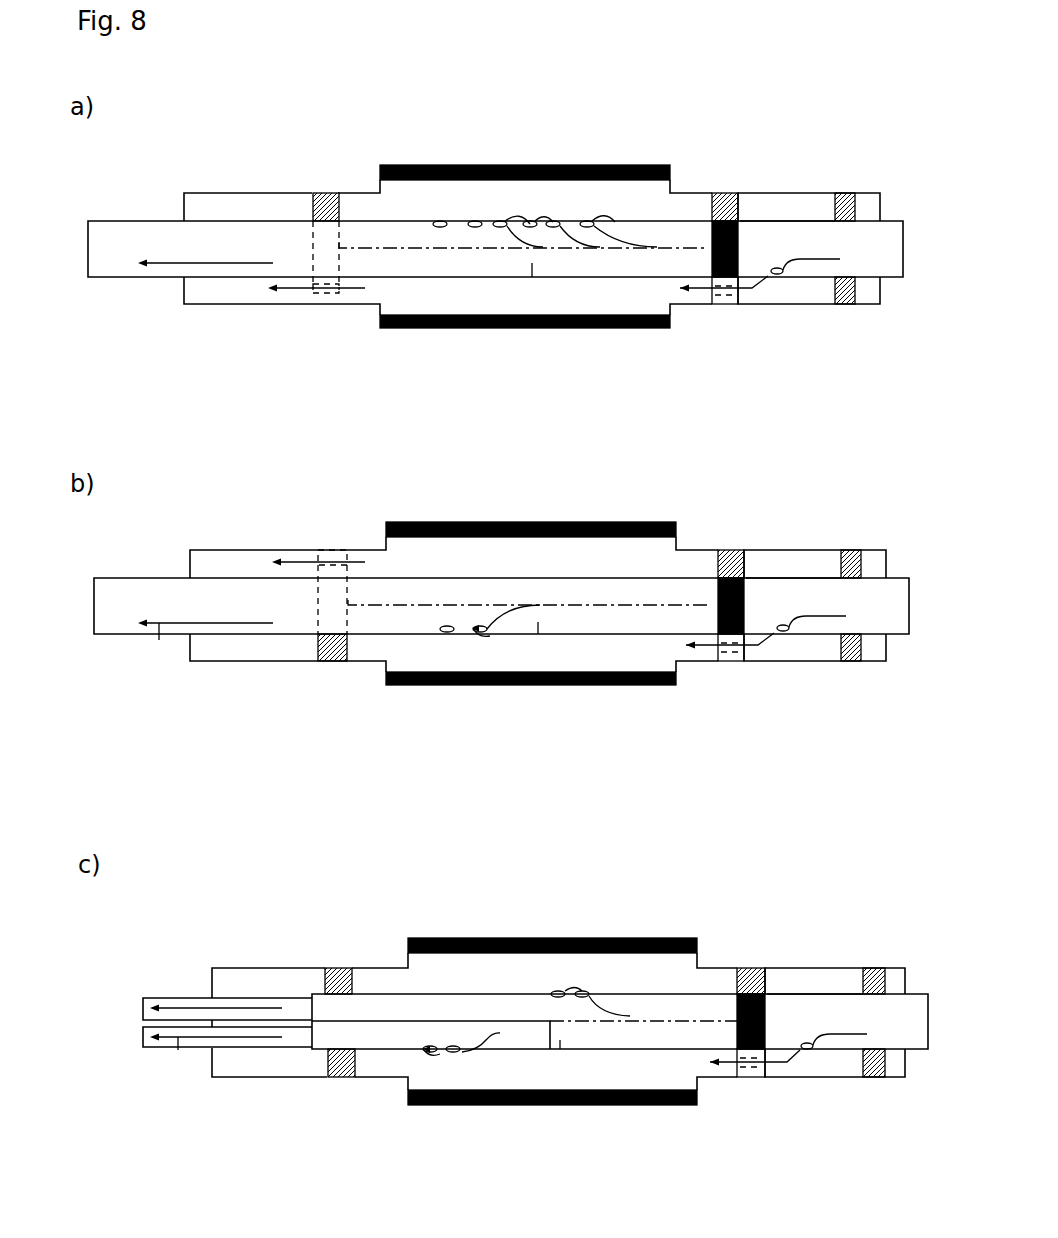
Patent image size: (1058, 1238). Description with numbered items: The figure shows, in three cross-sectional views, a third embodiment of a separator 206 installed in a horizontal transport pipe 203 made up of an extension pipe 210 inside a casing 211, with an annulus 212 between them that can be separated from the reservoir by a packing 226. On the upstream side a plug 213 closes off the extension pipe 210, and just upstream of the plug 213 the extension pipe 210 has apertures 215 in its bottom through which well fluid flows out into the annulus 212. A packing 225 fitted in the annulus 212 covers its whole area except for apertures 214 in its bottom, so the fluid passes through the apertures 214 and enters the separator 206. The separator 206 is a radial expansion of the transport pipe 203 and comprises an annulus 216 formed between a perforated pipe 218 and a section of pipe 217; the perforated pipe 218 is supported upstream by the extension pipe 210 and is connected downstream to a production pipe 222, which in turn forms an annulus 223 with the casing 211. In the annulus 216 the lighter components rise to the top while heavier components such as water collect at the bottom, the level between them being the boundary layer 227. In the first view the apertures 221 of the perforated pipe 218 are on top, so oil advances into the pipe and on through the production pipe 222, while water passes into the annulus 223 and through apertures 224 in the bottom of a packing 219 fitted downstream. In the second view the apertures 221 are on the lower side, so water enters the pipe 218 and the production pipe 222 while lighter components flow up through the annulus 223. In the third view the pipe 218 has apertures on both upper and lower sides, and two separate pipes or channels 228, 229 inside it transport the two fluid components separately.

The horizontal transport pipe 203 is at (750, 193).
The separator 206 is at (595, 165).
The extension pipe 210 is at (819, 221).
The casing 211 is at (872, 193).
The annulus 212 is at (680, 292).
The plug 213 is at (733, 221).
The apertures 214 is at (720, 304).
The apertures 215 is at (777, 274).
The annulus 216 is at (457, 297).
The section of pipe 217 is at (392, 307).
The perforated pipe 218 is at (532, 263).
The packing 219 is at (325, 200).
The apertures 221 is at (438, 222).
The production pipe 222 is at (255, 221).
The annulus 223 is at (285, 290).
The apertures 224 is at (323, 293).
The packing 225 is at (722, 200).
The packing 226 is at (848, 304).
The boundary layer 227 is at (358, 238).
The pipe or channel 228 is at (157, 998).
The pipe or channel 229 is at (159, 1047).